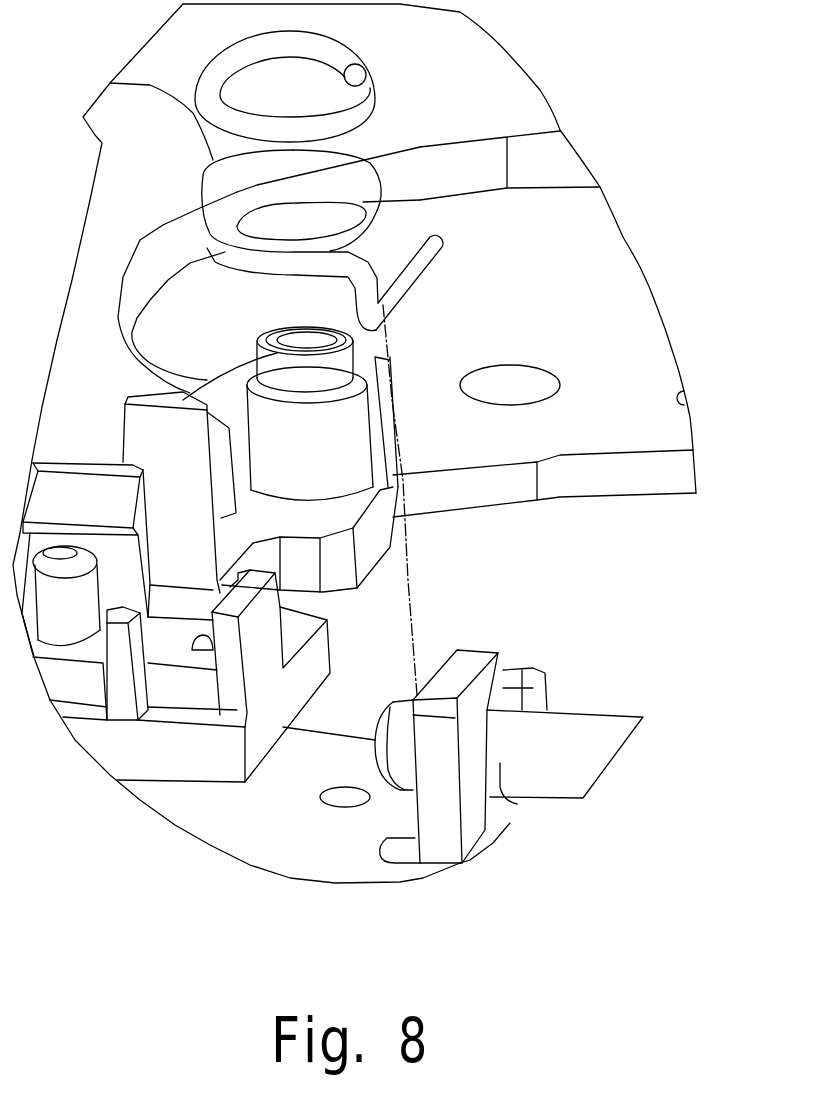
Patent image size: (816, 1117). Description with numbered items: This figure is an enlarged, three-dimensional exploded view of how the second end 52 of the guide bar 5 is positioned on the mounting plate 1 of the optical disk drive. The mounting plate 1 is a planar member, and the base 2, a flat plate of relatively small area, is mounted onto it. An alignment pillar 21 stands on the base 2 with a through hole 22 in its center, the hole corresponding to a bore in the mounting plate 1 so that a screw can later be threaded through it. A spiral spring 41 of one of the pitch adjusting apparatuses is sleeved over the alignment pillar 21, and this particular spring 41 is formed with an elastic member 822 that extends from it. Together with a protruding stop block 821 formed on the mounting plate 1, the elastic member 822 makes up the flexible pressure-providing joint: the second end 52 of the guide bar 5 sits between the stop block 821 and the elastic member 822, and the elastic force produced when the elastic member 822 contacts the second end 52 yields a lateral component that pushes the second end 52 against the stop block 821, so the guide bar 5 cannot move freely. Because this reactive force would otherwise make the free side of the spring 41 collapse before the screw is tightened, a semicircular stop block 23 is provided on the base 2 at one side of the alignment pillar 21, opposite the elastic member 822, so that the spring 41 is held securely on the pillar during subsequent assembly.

The spiral spring 41 is at (115, 83).
The semicircular stop block 23 is at (140, 277).
The through hole 22 is at (285, 340).
The alignment pillar 21 is at (383, 407).
The elastic member 822 is at (413, 273).
The protruding stop block 821 is at (527, 670).
The mounting plate 1 is at (348, 718).
The base 2 is at (260, 773).
The guide bar 5 is at (620, 705).
The second end 52 is at (517, 804).